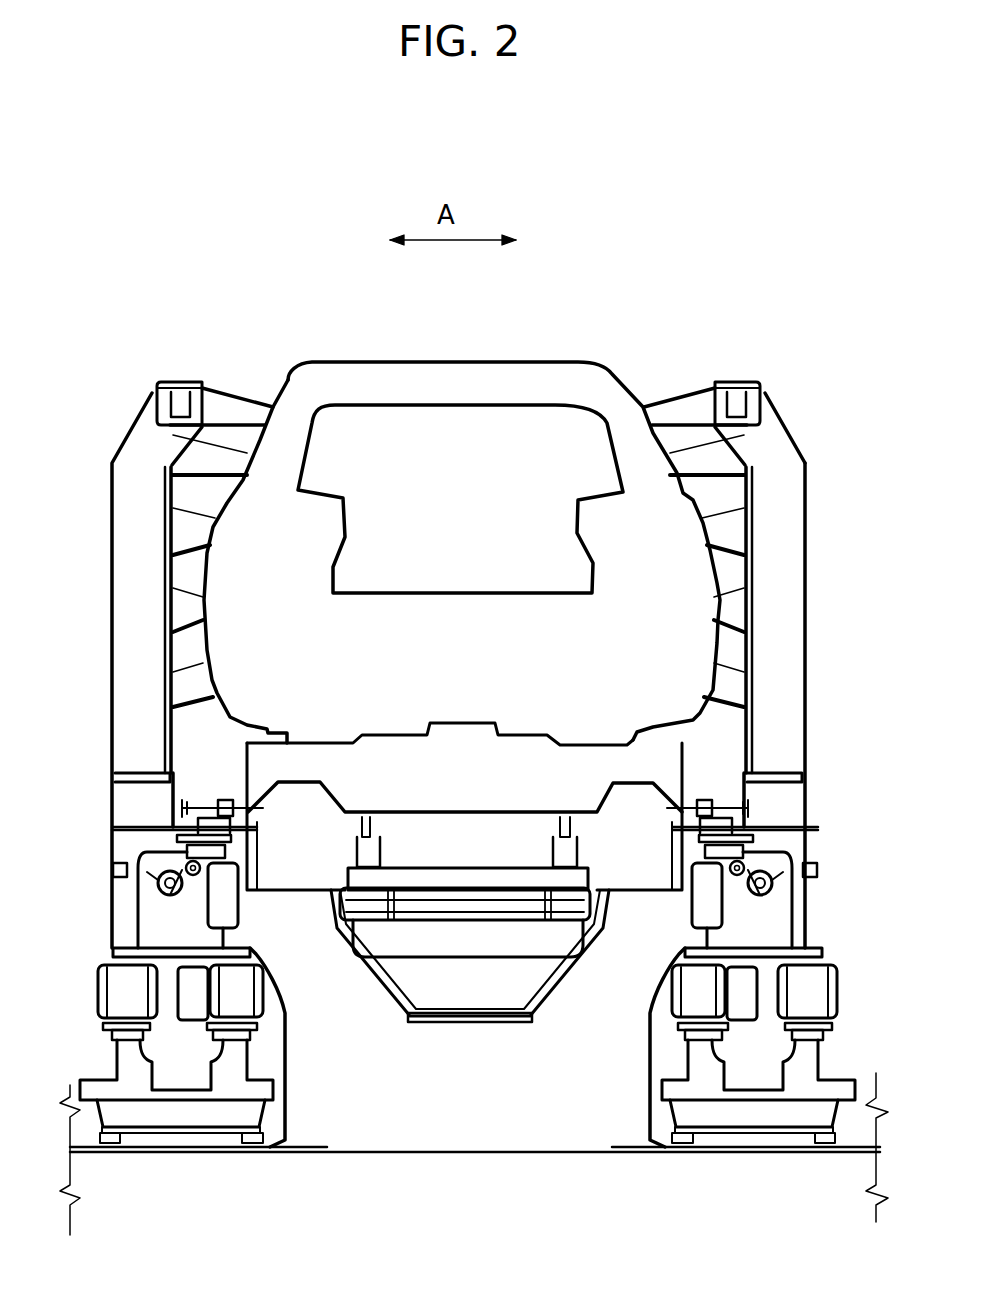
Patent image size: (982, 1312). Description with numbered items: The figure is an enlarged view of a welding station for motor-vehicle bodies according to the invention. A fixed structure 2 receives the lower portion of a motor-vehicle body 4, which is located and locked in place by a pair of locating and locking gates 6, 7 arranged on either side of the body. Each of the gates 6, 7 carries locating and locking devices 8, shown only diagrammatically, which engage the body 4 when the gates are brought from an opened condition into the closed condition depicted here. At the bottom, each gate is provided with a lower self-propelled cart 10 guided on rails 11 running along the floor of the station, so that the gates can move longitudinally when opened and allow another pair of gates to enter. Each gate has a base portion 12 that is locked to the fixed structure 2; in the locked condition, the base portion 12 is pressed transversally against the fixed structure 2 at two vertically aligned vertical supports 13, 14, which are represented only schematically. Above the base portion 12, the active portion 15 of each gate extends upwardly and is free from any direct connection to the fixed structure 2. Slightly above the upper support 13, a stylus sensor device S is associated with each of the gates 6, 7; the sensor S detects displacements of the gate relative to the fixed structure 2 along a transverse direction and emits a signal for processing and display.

The fixed structure 2 is at (378, 1125).
The motor-vehicle body 4 is at (575, 362).
The locating and locking gate 6 is at (129, 412).
The locating and locking gate 7 is at (783, 419).
The locating and locking devices 8 is at (262, 400).
The lower self-propelled cart 10 is at (122, 978).
The rails 11 is at (115, 1040).
The base portion 12 is at (137, 838).
The upper vertical support 13 is at (227, 848).
The lower vertical support 14 is at (228, 938).
The active portion 15 is at (808, 730).
The stylus sensor device S is at (232, 800).